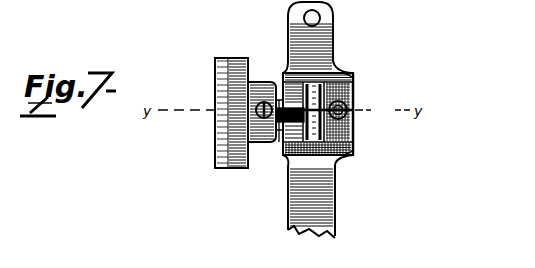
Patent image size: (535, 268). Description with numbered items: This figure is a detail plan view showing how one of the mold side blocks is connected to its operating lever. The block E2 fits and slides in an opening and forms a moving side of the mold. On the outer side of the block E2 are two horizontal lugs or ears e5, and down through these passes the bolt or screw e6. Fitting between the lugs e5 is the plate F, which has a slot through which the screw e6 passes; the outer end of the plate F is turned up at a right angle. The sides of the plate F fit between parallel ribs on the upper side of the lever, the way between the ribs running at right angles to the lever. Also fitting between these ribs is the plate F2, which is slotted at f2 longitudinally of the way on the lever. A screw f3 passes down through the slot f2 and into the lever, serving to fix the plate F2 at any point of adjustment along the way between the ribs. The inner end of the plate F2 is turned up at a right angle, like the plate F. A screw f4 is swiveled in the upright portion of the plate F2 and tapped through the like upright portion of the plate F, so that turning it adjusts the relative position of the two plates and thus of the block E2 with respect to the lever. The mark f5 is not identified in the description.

The block E2 is at (215, 115).
The plate F is at (294, 86).
The plate F2 is at (353, 135).
The slot f2 is at (355, 110).
The screw f3 is at (343, 107).
The horizontal lugs or ears e5 is at (263, 143).
The bolt or screw e6 is at (265, 101).
The screw f4 is at (268, 142).
The wall f5 is at (281, 143).